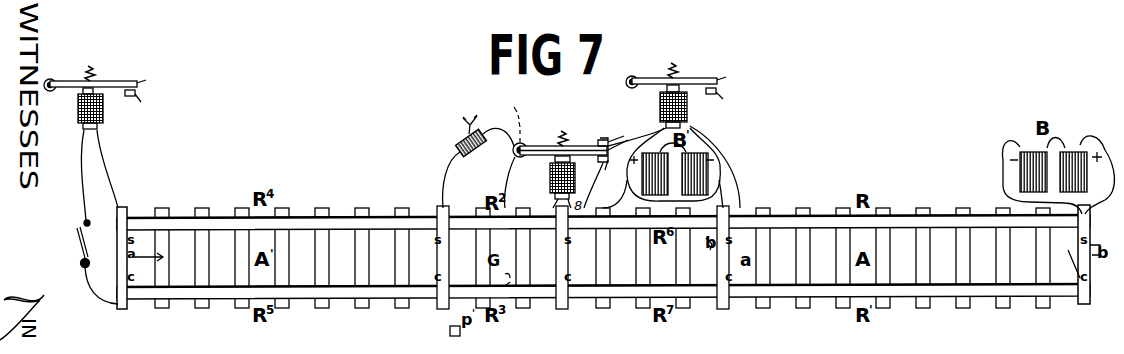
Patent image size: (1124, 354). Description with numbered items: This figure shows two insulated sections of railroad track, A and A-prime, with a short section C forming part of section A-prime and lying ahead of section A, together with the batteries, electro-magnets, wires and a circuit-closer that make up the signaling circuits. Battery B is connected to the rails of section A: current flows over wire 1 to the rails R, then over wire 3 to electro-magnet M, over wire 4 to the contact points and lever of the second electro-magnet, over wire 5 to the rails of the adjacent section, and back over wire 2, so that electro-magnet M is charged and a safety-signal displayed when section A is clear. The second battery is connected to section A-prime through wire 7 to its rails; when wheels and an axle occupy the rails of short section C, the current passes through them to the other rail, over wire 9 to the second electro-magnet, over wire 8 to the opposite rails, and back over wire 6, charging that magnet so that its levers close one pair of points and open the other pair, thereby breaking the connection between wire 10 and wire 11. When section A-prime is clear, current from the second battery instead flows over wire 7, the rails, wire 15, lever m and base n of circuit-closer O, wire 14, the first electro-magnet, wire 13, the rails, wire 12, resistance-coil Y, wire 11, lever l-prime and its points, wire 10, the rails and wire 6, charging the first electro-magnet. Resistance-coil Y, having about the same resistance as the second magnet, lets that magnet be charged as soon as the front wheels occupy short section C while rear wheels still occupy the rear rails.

The wire 1 is at (1103, 182).
The wire 2 is at (1050, 237).
The wire 3 is at (717, 167).
The wire 4 is at (637, 135).
The wire 5 is at (509, 278).
The wire 6 is at (715, 192).
The wire 7 is at (615, 194).
The wire 8 is at (505, 182).
The wire 9 is at (549, 201).
The wire 10 is at (593, 185).
The wire 11 is at (498, 135).
The wire 12 is at (446, 180).
The wire 13 is at (109, 169).
The wire 14 is at (74, 175).
The wire 15 is at (101, 285).